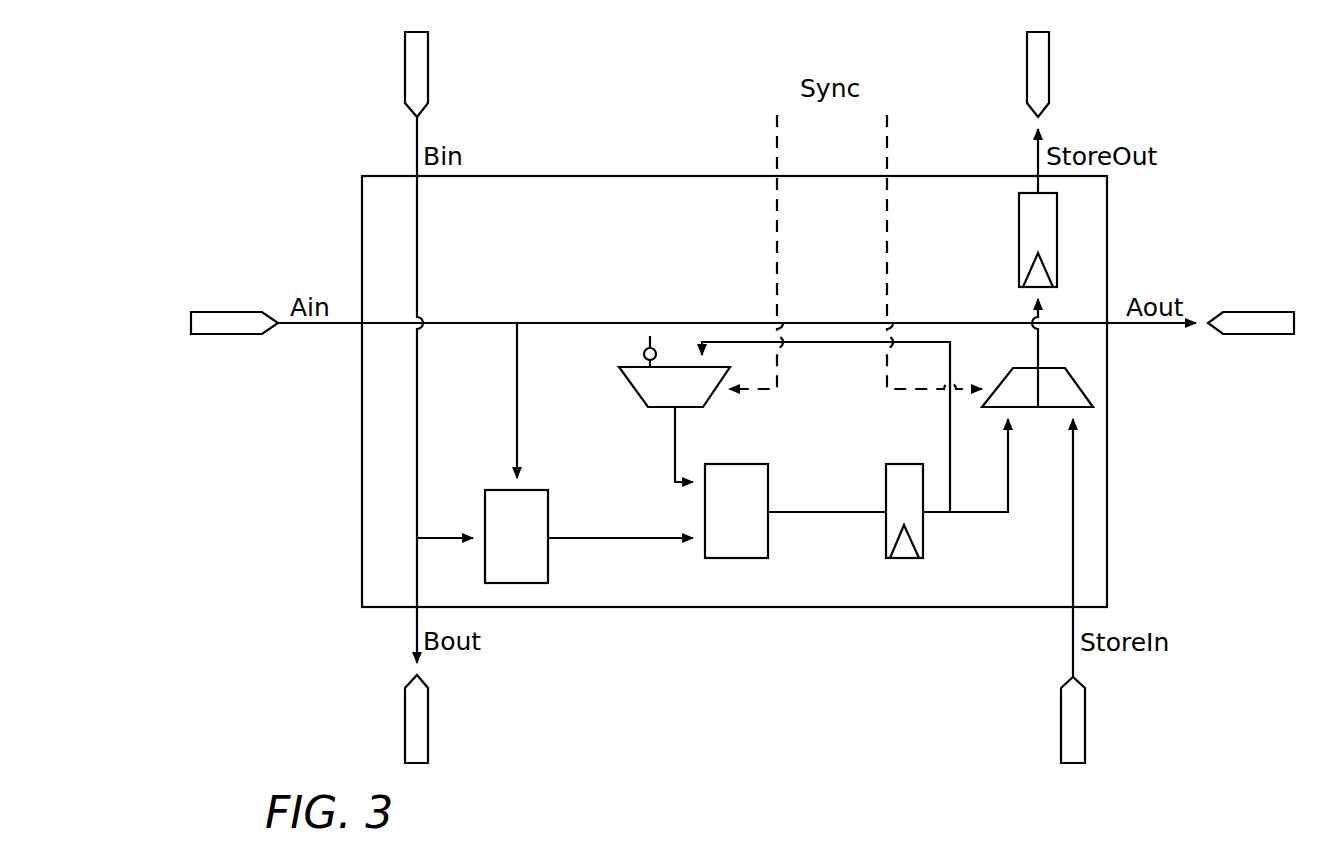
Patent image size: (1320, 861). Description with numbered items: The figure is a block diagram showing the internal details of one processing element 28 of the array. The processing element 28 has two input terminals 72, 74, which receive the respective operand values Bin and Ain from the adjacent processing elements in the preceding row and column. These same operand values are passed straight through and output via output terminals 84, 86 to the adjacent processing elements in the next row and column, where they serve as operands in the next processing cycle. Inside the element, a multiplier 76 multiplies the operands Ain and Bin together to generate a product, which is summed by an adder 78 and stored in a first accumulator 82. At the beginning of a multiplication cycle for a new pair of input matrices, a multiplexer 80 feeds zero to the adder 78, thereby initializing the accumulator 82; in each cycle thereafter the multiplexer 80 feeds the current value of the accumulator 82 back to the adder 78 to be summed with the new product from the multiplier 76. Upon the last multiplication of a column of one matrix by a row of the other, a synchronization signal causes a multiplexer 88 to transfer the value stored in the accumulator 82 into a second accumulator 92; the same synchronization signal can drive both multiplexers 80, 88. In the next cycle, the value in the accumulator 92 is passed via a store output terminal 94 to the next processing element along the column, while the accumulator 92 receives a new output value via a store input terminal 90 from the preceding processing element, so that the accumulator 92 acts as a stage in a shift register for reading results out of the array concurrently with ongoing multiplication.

The processing element 28 is at (604, 176).
The input terminal 72 is at (405, 70).
The input terminal 74 is at (233, 334).
The multiplier 76 is at (548, 576).
The adder 78 is at (768, 550).
The multiplexer 80 is at (637, 392).
The first accumulator 82 is at (923, 546).
The output terminal 84 is at (405, 724).
The output terminal 86 is at (1253, 334).
The multiplexer 88 is at (1043, 407).
The store input terminal 90 is at (1085, 728).
The second accumulator 92 is at (1019, 234).
The store output terminal 94 is at (1049, 70).